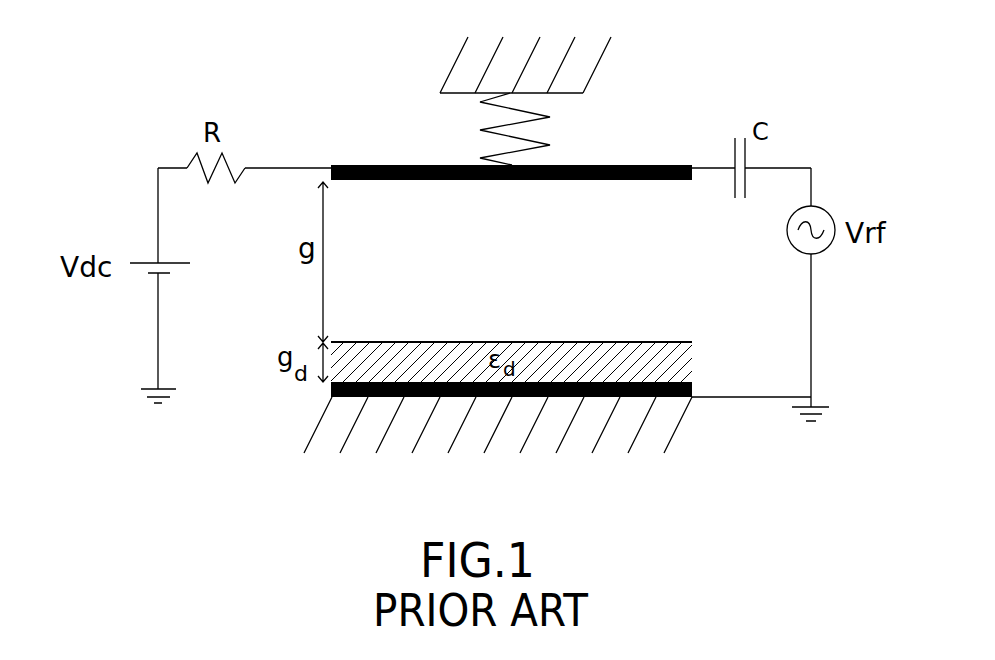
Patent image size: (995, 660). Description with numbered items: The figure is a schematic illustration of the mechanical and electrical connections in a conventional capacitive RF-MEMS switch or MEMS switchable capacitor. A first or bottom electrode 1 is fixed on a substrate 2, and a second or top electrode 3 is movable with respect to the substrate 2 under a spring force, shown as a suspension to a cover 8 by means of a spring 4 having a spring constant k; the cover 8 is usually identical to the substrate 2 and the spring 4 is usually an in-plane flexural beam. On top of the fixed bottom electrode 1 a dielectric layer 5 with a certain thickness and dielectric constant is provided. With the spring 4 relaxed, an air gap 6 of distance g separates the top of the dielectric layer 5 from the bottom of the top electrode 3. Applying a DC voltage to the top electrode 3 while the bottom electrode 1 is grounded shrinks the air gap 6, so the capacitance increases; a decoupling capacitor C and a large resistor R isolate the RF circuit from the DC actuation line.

The bottom electrode 1 is at (692, 382).
The substrate 2 is at (652, 437).
The top electrode 3 is at (653, 165).
The spring 4 is at (480, 127).
The dielectric layer 5 is at (668, 353).
The air gap 6 is at (648, 265).
The cover 8 is at (582, 60).